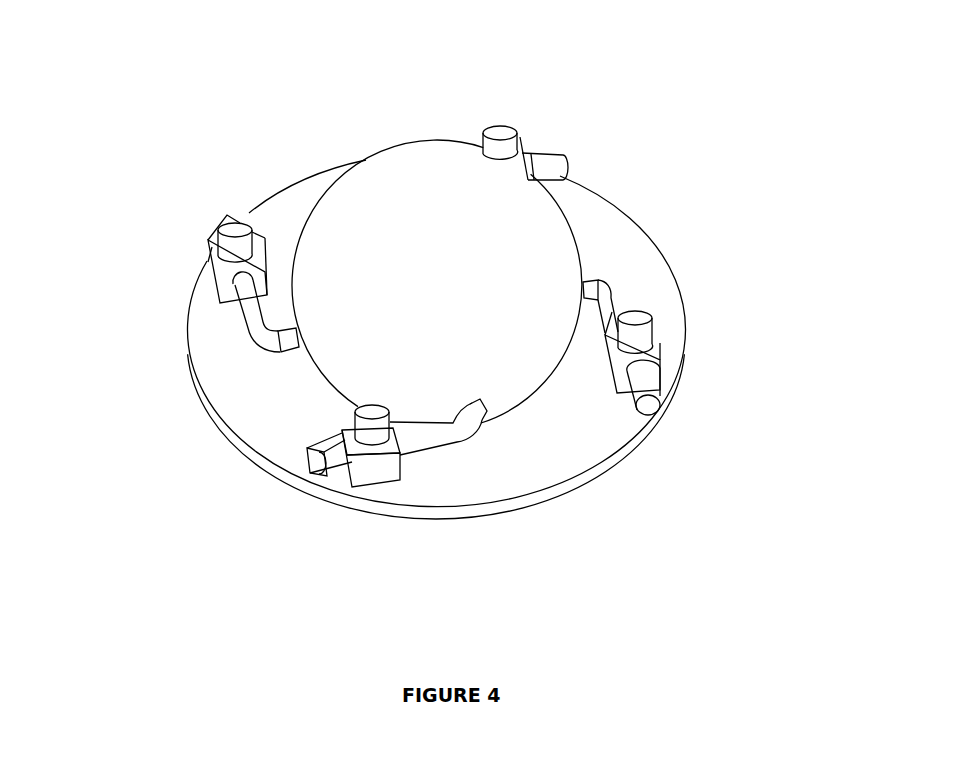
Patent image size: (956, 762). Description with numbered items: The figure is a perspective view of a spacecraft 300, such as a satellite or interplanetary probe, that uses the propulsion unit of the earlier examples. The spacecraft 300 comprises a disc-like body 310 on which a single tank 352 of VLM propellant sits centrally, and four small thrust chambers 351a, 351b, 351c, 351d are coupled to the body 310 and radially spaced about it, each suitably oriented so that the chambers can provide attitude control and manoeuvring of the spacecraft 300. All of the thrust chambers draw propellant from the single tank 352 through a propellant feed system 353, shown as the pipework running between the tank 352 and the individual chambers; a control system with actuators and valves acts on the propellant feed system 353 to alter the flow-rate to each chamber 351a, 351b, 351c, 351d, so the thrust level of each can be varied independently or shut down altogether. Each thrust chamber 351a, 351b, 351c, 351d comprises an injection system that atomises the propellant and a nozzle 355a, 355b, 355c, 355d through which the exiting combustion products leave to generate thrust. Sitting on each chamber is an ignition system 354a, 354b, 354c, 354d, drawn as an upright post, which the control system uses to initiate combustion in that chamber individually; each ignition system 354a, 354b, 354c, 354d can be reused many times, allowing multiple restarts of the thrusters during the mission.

The spacecraft 300 is at (124, 70).
The disc-like body 310 is at (633, 277).
The single tank 352 is at (440, 250).
The propellant feed system 353 is at (245, 313).
The thrust chamber 351a is at (377, 485).
The thrust chamber 351b is at (215, 277).
The thrust chamber 351c is at (523, 168).
The thrust chamber 351d is at (617, 388).
The ignition system 354a is at (370, 430).
The ignition system 354b is at (232, 233).
The ignition system 354c is at (500, 155).
The ignition system 354d is at (627, 335).
The nozzle 355a is at (323, 458).
The nozzle 355b is at (215, 235).
The nozzle 355c is at (522, 165).
The nozzle 355d is at (643, 400).